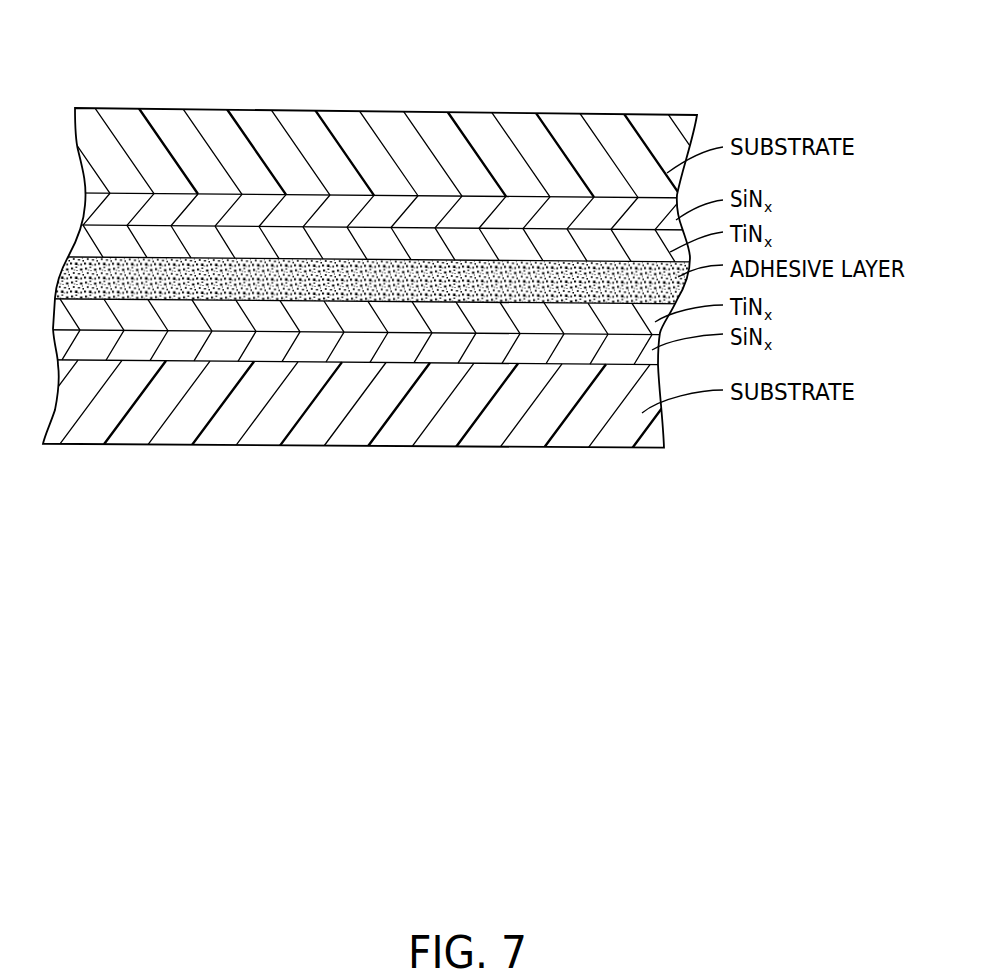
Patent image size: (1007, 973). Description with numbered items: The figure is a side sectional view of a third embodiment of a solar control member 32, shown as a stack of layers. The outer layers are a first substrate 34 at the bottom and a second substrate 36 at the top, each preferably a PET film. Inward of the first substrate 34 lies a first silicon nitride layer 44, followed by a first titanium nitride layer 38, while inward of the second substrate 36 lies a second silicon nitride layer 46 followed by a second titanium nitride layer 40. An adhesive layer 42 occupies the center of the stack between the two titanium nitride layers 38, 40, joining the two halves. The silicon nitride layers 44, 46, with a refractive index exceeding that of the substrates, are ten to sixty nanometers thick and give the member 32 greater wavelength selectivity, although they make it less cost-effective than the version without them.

The solar control member 32 is at (560, 60).
The first substrate 34 is at (122, 440).
The second substrate 36 is at (163, 120).
The first titanium nitride layer 38 is at (64, 322).
The second titanium nitride layer 40 is at (74, 250).
The adhesive layer 42 is at (60, 287).
The first silicon nitride layer 44 is at (64, 337).
The second silicon nitride layer 46 is at (86, 205).